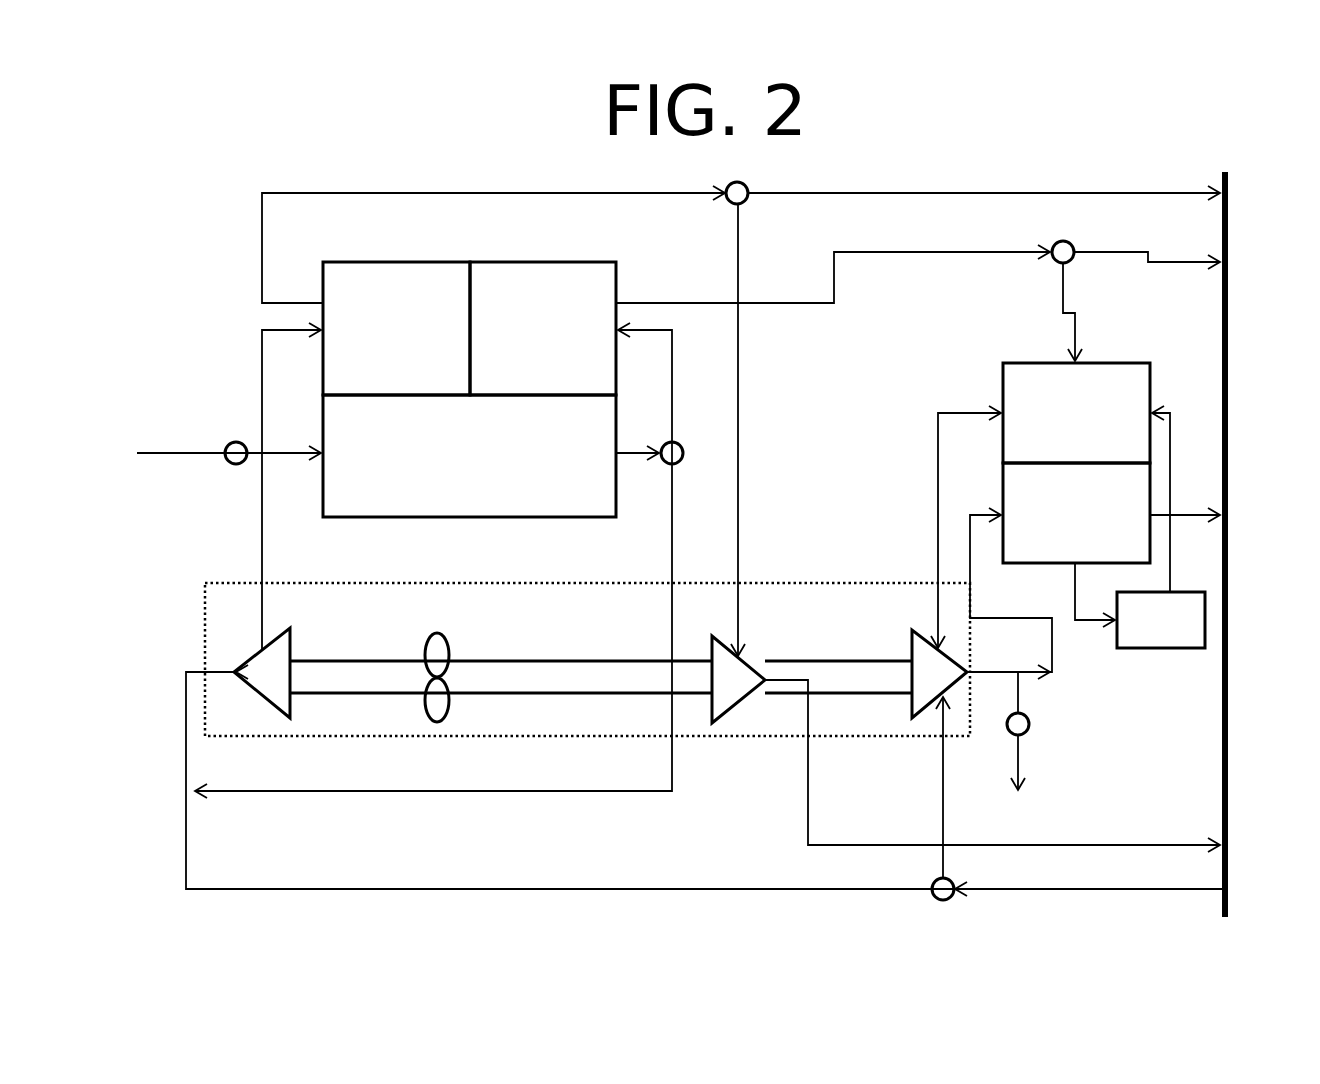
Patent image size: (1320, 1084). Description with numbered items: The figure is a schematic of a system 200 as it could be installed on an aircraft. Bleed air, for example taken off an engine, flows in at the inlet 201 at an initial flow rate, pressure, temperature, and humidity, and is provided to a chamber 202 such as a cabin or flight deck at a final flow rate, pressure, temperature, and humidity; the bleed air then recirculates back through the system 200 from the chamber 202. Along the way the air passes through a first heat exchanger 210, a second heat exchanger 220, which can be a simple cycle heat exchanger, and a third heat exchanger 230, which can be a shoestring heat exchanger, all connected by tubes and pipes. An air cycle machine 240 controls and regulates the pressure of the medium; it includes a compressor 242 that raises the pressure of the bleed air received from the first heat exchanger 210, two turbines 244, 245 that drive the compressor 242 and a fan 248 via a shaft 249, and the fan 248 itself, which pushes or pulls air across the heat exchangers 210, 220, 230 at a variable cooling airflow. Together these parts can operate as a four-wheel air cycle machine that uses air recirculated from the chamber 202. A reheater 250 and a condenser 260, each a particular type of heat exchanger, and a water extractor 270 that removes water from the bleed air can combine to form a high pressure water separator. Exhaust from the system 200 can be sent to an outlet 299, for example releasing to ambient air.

The system 200 is at (183, 213).
The chamber 202 is at (1225, 509).
The inlet 201 is at (229, 454).
The first heat exchanger 210 is at (452, 478).
The second heat exchanger 220 is at (525, 381).
The third heat exchanger 230 is at (378, 367).
The air cycle machine 240 is at (205, 625).
The compressor 242 is at (705, 764).
The turbine 244 is at (966, 744).
The turbine 245 is at (982, 693).
The fan 248 is at (447, 640).
The shaft 249 is at (601, 677).
The reheater 250 is at (1057, 426).
The condenser 260 is at (1057, 526).
The water extractor 270 is at (1143, 631).
The outlet 299 is at (1018, 757).